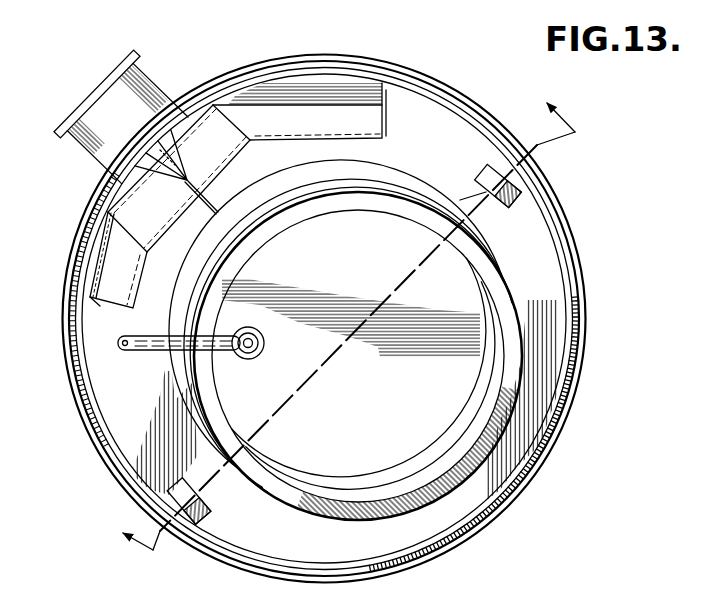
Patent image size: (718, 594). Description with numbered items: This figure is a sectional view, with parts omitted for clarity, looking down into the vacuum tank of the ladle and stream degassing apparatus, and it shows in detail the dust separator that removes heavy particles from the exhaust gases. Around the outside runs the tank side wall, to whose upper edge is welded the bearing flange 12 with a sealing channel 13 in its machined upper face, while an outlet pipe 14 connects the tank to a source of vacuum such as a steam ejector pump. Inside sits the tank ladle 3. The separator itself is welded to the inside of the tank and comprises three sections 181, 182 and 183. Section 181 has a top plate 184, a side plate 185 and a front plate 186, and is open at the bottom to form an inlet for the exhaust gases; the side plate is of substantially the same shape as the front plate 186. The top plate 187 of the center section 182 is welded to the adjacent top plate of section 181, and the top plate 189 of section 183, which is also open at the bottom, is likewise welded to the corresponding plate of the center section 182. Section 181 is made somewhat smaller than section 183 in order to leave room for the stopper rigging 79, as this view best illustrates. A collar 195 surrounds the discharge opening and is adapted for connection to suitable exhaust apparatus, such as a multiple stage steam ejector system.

The tank ladle 3 is at (254, 504).
The bearing flange 12 is at (587, 352).
The sealing channel 13 is at (574, 306).
The outlet pipe 14 is at (360, 343).
The stopper rigging 79 is at (153, 358).
The section 181 is at (145, 282).
The center section 182 is at (235, 172).
The section 183 is at (391, 126).
The top plate 184 is at (100, 262).
The side plate 185 is at (100, 306).
The front plate 186 is at (384, 96).
The top plate 187 is at (201, 136).
The top plate 189 is at (337, 100).
The collar 195 is at (143, 85).